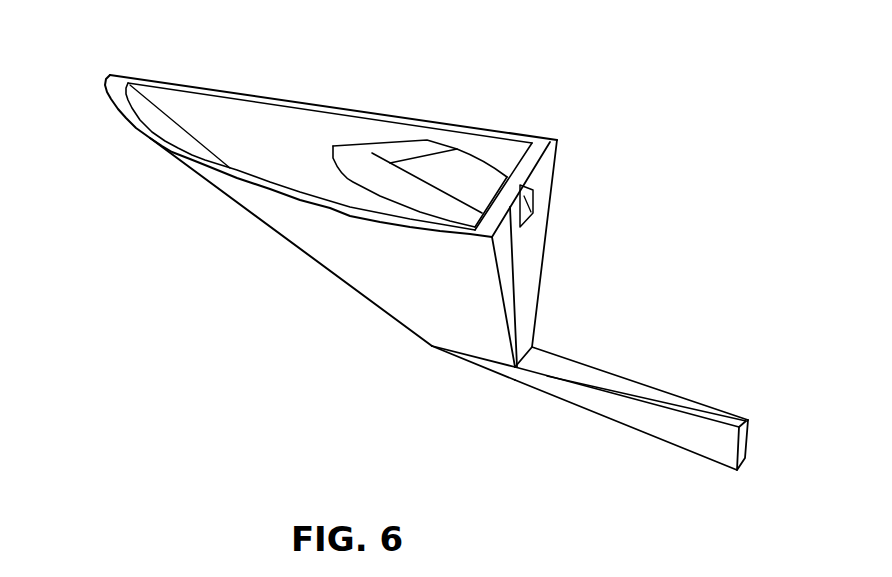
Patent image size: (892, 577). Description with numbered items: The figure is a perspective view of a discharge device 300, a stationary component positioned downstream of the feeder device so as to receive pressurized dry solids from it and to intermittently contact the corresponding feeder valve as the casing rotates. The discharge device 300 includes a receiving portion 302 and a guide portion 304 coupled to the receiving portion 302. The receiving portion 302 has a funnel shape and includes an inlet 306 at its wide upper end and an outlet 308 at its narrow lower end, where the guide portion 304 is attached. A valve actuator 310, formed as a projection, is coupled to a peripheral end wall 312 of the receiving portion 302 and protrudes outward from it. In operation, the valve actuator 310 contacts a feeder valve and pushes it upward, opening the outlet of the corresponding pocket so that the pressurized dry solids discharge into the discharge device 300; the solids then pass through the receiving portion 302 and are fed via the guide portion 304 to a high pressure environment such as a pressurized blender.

The discharge device 300 is at (148, 55).
The receiving portion 302 is at (318, 282).
The guide portion 304 is at (565, 413).
The inlet 306 is at (300, 112).
The outlet 308 is at (453, 347).
The valve actuator 310 is at (358, 158).
The peripheral end wall 312 is at (533, 237).